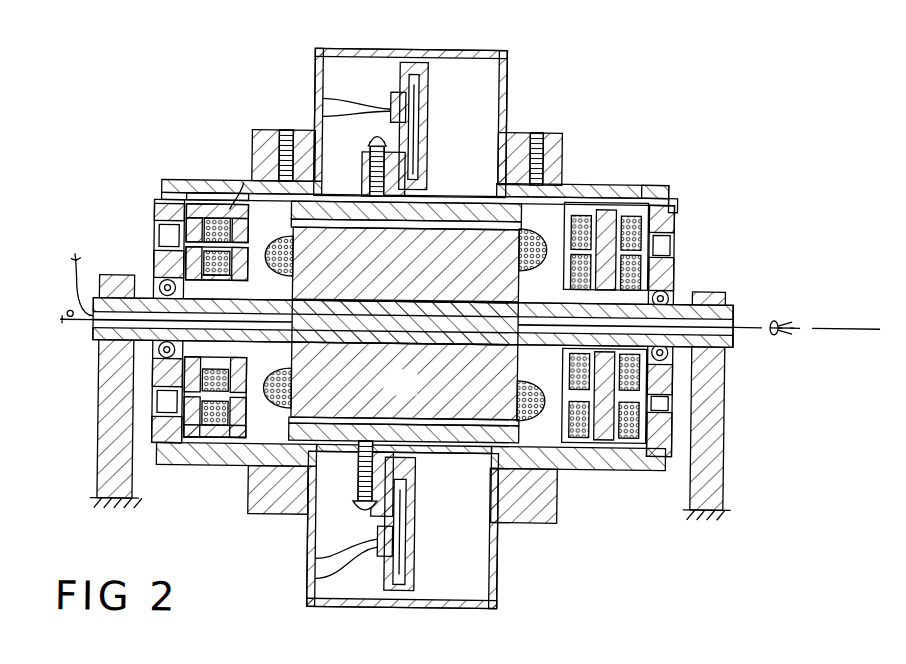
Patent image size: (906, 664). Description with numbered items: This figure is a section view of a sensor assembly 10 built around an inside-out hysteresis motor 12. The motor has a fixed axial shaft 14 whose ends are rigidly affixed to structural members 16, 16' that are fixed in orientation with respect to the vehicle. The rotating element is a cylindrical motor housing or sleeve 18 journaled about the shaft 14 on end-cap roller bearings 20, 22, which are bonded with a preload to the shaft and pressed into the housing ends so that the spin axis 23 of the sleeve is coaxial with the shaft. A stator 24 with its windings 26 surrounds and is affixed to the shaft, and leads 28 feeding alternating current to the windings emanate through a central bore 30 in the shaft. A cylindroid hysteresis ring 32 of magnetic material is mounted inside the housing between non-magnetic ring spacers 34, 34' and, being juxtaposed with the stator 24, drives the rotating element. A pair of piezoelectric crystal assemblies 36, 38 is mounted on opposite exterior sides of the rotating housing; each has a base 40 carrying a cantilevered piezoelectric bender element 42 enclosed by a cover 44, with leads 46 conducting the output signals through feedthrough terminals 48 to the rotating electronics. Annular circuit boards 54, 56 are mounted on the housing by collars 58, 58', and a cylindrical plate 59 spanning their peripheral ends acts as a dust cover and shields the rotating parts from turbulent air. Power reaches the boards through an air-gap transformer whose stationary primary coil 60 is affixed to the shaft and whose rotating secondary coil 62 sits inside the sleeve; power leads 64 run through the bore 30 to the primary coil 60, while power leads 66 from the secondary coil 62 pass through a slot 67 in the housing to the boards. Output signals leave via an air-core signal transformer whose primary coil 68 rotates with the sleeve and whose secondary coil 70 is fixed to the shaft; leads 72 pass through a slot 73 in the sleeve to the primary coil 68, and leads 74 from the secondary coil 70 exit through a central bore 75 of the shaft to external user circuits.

The sensor assembly 10 is at (567, 78).
The motor 12 is at (606, 176).
The fixed axial shaft 14 is at (735, 305).
The structural member 16 is at (726, 406).
The structural member 16' is at (95, 391).
The motor housing 18 is at (672, 187).
The bearing 20 is at (678, 212).
The bearing 22 is at (155, 207).
The spin axis 23 is at (829, 322).
The stator 24 is at (390, 396).
The stator windings 26 is at (569, 183).
The leads 28 is at (75, 320).
The central bore 30 is at (76, 328).
The hysteresis ring 32 is at (468, 200).
The ring spacer 34 is at (578, 486).
The ring spacer 34' is at (324, 474).
The piezoelectric crystal assembly 36 is at (410, 63).
The piezoelectric crystal assembly 38 is at (429, 597).
The base 40 is at (360, 470).
The piezoelectric bender element 42 is at (409, 518).
The cover 44 is at (418, 558).
The leads 46 is at (380, 545).
The feedthrough terminals 48 is at (378, 558).
The annular circuit board 54 is at (312, 70).
The annular circuit board 56 is at (505, 95).
The collar 58 is at (545, 141).
The collar 58' is at (263, 136).
The cylindrical plate 59 is at (338, 50).
The primary coil 60 is at (187, 258).
The secondary coil 62 is at (183, 228).
The power leads 64 is at (72, 264).
The power leads 66 is at (228, 197).
The slot 67 is at (158, 186).
The primary coil 68 is at (640, 213).
The secondary coil 70 is at (662, 289).
The leads 72 is at (603, 199).
The slot 73 is at (653, 188).
The leads 74 is at (777, 333).
The central bore 75 is at (735, 333).